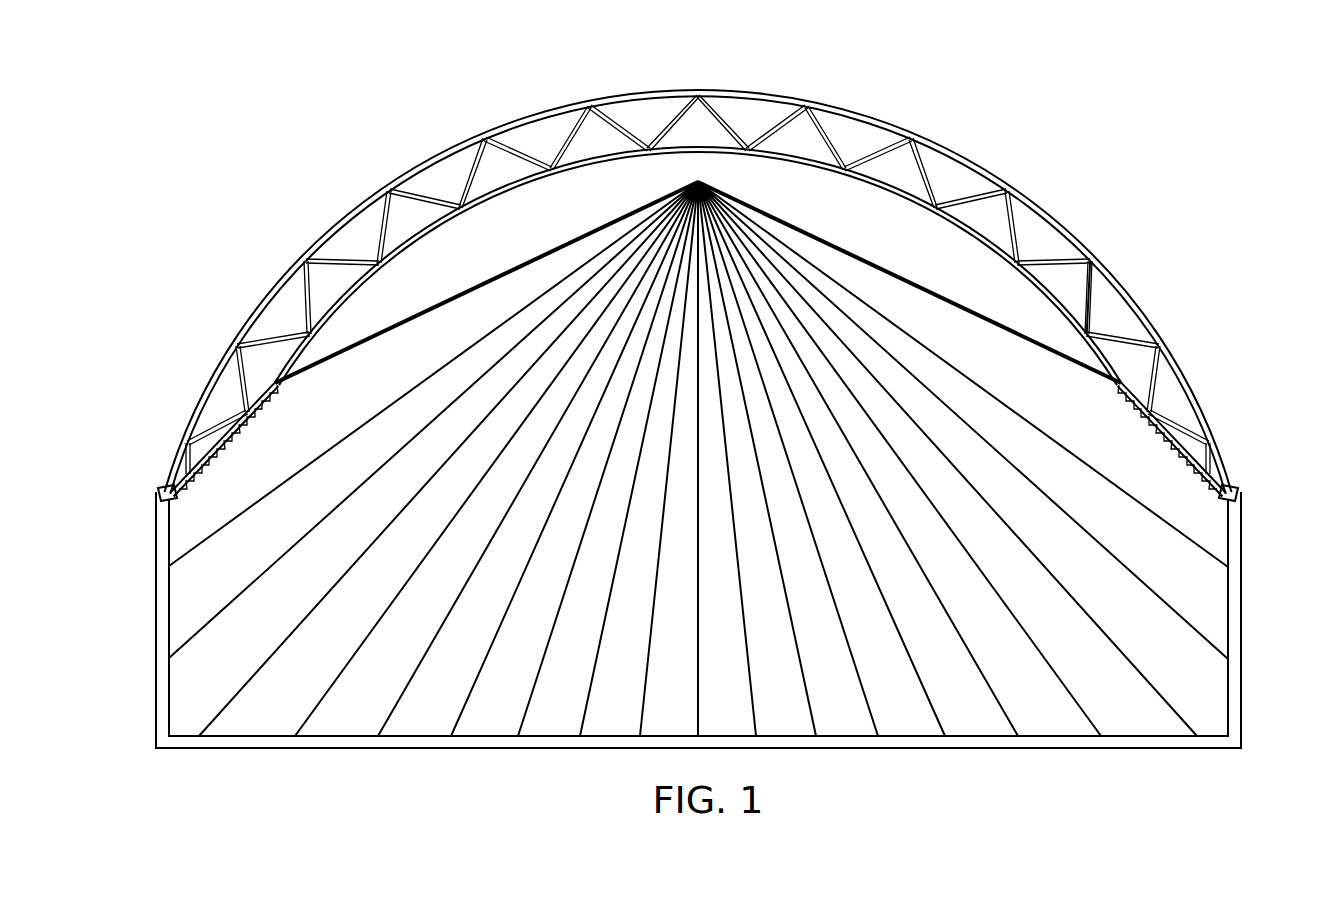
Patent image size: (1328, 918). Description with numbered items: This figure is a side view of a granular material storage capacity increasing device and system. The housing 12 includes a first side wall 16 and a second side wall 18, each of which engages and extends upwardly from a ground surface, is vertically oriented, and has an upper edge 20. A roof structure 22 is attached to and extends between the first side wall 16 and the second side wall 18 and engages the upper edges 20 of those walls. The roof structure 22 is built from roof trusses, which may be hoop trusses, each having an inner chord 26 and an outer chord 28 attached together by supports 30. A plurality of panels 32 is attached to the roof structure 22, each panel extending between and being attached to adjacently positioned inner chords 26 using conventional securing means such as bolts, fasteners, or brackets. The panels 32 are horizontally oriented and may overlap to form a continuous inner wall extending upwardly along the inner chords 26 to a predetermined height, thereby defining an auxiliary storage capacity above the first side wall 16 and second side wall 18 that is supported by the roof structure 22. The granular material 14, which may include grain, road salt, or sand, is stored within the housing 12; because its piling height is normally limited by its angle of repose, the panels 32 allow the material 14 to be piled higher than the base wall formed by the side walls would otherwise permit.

The housing 12 is at (990, 154).
The granular material 14 is at (738, 288).
The first side wall 16 is at (156, 683).
The second side wall 18 is at (1242, 680).
The upper edge 20 is at (160, 497).
The roof structure 22 is at (686, 158).
The inner chord 26 is at (950, 220).
The outer chord 28 is at (1088, 255).
The supports 30 is at (380, 213).
The panels 32 is at (300, 383).